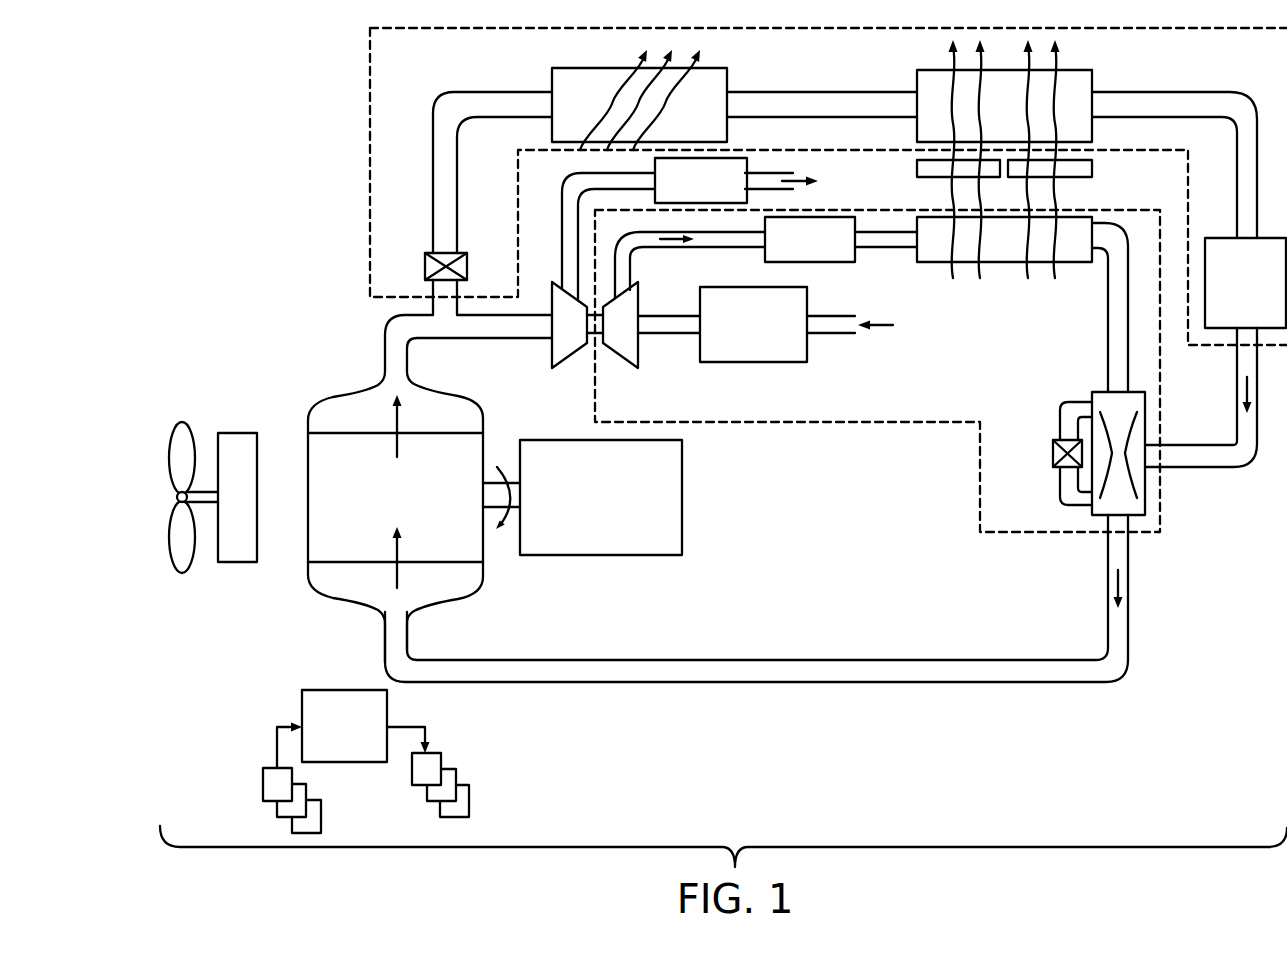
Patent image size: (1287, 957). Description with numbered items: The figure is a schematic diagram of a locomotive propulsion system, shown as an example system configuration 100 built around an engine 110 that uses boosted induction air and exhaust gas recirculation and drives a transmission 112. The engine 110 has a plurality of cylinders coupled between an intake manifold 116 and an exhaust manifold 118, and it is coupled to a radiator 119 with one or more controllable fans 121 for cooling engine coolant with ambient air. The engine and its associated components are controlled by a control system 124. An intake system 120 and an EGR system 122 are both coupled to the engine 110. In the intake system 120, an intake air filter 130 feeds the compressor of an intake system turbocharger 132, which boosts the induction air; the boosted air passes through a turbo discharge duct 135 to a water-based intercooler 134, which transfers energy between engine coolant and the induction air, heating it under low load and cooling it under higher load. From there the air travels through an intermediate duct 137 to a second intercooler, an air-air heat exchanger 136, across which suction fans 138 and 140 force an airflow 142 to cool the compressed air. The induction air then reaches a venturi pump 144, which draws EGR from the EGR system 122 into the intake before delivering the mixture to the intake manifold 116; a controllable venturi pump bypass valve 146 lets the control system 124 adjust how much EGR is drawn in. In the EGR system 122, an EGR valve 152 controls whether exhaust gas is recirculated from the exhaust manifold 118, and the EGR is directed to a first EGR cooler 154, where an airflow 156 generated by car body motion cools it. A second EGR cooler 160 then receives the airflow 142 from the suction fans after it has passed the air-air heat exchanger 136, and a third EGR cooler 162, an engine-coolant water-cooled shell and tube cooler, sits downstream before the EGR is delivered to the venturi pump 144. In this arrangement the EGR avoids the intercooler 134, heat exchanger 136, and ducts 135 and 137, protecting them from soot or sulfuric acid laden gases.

The system configuration 100 is at (290, 271).
The engine 110 is at (411, 501).
The transmission 112 is at (614, 501).
The intake manifold 116 is at (323, 575).
The exhaust manifold 118 is at (323, 420).
The radiator 119 is at (210, 497).
The intake system 120 is at (922, 425).
The controllable fan 121 is at (181, 575).
The EGR system 122 is at (368, 158).
The control system 124 is at (508, 813).
The intake air filter 130 is at (767, 335).
The intake system turbocharger 132 is at (660, 368).
The water-based intercooler 134 is at (822, 246).
The turbo discharge duct 135 is at (686, 250).
The air-air heat exchanger 136 is at (917, 253).
The intermediate duct 137 is at (868, 252).
The suction fan 138 is at (917, 167).
The suction fan 140 is at (1095, 170).
The airflow 142 is at (950, 272).
The venturi pump 144 is at (1147, 492).
The venturi pump bypass valve 146 is at (1067, 418).
The EGR valve 152 is at (425, 253).
The first EGR cooler 154 is at (717, 83).
The airflow 156 is at (640, 62).
The second EGR cooler 160 is at (1080, 83).
The third EGR cooler 162 is at (1259, 290).